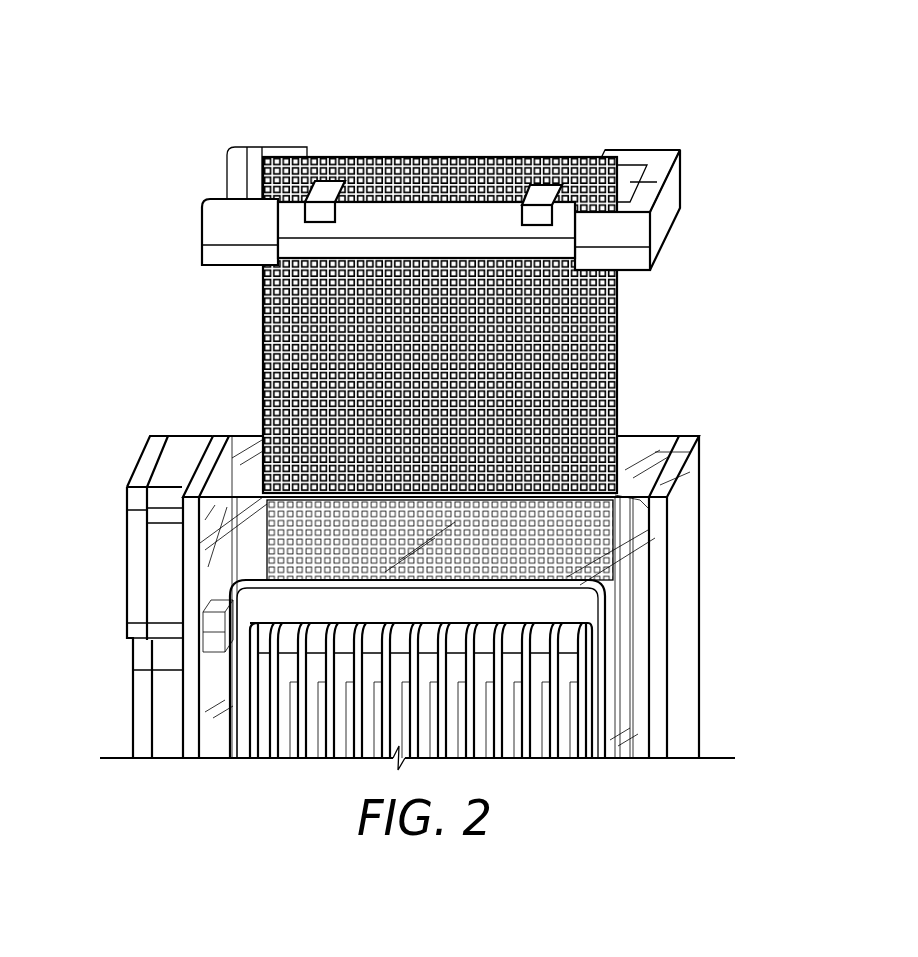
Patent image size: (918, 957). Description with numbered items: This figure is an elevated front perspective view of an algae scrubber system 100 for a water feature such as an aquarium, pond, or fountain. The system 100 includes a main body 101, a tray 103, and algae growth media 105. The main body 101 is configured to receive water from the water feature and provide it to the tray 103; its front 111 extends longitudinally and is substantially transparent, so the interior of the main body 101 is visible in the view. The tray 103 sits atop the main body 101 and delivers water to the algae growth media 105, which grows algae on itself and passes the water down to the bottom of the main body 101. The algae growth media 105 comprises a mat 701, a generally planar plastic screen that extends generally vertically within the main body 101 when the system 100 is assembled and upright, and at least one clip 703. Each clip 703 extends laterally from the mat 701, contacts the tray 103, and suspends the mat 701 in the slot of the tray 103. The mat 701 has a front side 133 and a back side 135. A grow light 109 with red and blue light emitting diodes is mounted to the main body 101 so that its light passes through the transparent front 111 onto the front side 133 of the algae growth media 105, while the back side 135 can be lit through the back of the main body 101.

The algae scrubber system 100 is at (143, 91).
The main body 101 is at (641, 485).
The tray 103 is at (218, 204).
The algae growth media 105 is at (591, 160).
The grow light 109 is at (593, 708).
The front 111 is at (212, 675).
The front side 133 is at (415, 157).
The back side 135 is at (572, 163).
The mat 701 is at (482, 160).
The clip 703 is at (330, 181).